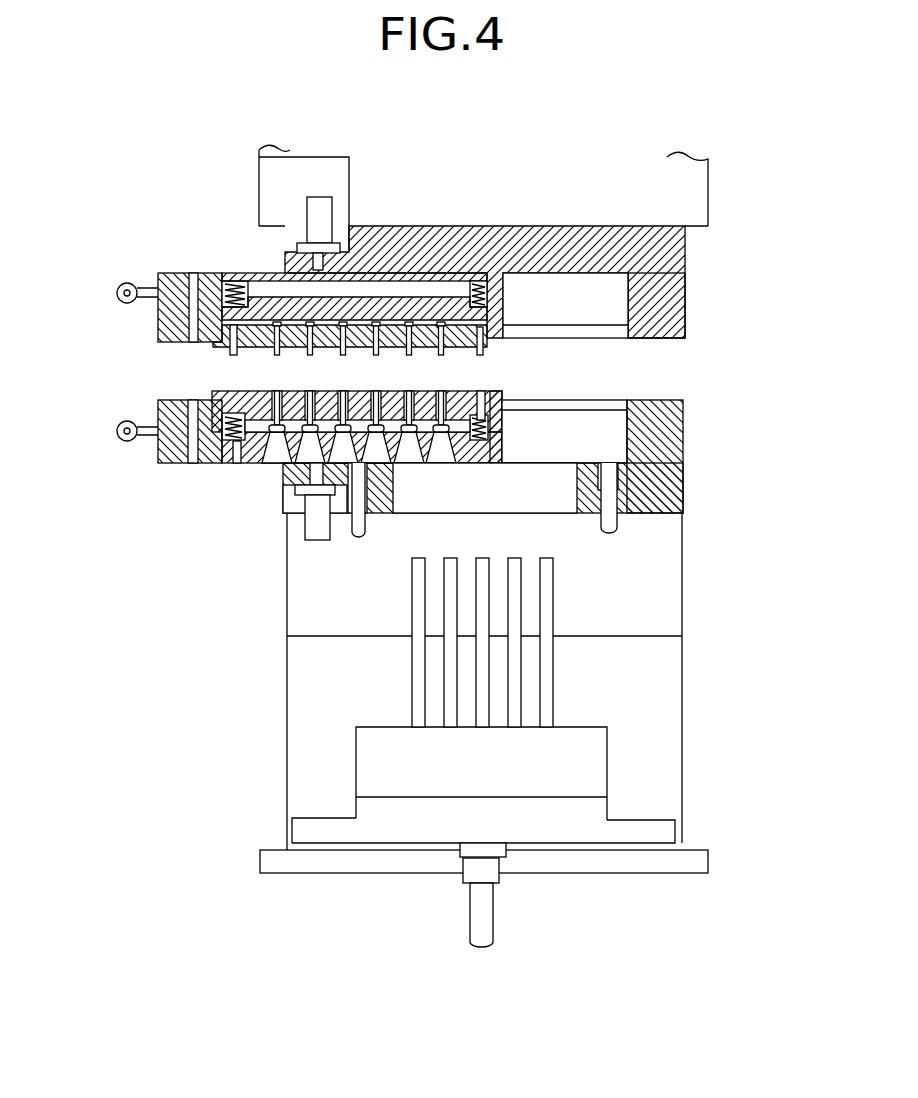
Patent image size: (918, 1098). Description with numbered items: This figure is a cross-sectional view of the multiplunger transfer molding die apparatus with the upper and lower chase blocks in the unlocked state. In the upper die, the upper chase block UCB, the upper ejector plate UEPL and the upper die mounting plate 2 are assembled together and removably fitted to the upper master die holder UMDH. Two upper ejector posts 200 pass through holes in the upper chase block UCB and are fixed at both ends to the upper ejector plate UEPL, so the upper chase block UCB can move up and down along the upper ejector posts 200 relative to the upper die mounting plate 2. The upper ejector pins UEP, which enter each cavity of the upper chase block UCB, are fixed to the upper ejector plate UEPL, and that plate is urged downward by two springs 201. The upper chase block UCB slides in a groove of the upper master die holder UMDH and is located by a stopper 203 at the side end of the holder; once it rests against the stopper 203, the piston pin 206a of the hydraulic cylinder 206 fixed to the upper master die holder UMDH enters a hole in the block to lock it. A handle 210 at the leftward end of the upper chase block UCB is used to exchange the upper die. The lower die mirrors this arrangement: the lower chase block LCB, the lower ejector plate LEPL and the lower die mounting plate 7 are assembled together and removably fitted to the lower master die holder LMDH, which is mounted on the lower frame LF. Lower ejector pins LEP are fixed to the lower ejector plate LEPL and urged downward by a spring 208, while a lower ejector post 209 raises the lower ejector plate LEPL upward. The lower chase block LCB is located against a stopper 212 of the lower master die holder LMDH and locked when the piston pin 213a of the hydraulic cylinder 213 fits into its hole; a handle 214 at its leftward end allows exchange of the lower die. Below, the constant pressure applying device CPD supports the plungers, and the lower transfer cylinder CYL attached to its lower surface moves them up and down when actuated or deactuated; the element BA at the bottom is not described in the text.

The hydraulic cylinder 206 is at (327, 203).
The piston pin 206a is at (313, 264).
The upper ejector plate UEPL is at (421, 307).
The upper die mounting plate 2 is at (465, 285).
The upper master die holder UMDH is at (540, 230).
The handle 210 is at (122, 282).
The springs 201 is at (490, 292).
The stopper 203 is at (672, 292).
The upper ejector pins UEP is at (245, 338).
The upper ejector posts 200 is at (230, 350).
The upper chase block UCB is at (457, 343).
The lower ejector pins LEP is at (300, 407).
The lower chase block LCB is at (158, 413).
The handle 214 is at (122, 441).
The stopper 212 is at (680, 421).
The lower ejector plate LEPL is at (482, 456).
The lower master die holder LMDH is at (673, 500).
The lower die mounting plate 7 is at (452, 452).
The spring 208 is at (266, 459).
The piston pin 213a is at (300, 484).
The lower ejector post 209 is at (357, 513).
The hydraulic cylinder 213 is at (312, 537).
The lower frame LF is at (295, 608).
The constant pressure applying device CPD is at (365, 764).
The base BA is at (297, 833).
The lower transfer cylinder CYL is at (475, 908).